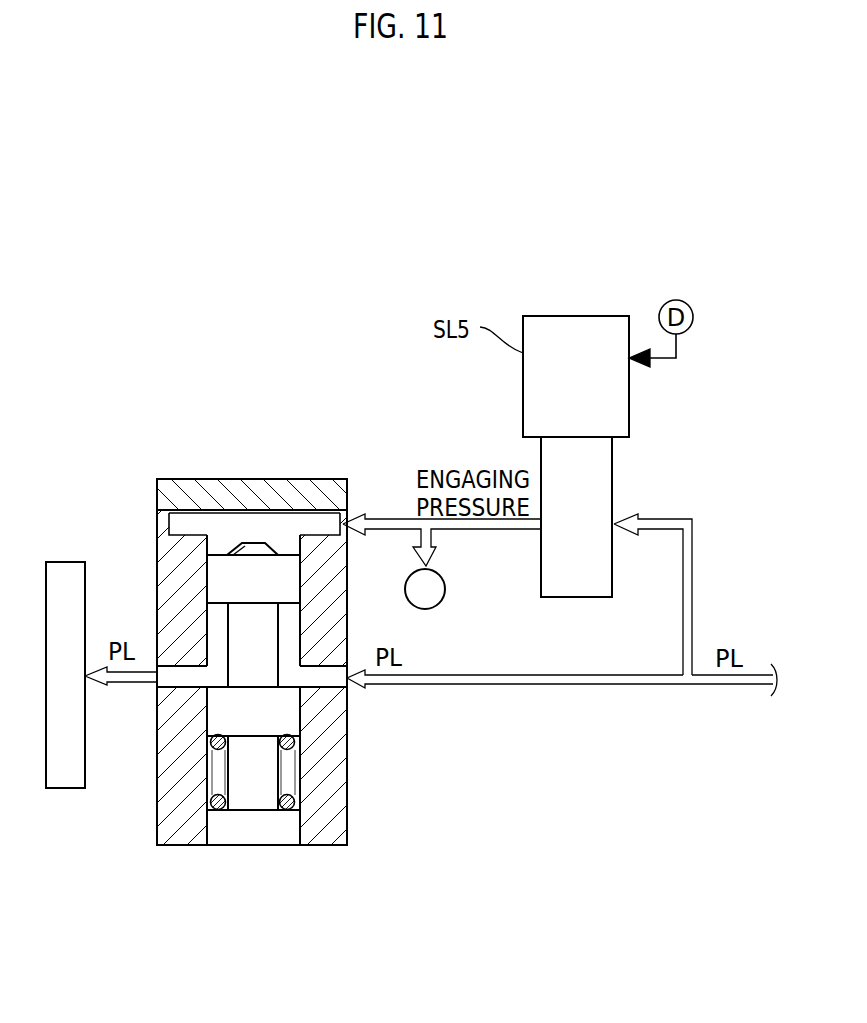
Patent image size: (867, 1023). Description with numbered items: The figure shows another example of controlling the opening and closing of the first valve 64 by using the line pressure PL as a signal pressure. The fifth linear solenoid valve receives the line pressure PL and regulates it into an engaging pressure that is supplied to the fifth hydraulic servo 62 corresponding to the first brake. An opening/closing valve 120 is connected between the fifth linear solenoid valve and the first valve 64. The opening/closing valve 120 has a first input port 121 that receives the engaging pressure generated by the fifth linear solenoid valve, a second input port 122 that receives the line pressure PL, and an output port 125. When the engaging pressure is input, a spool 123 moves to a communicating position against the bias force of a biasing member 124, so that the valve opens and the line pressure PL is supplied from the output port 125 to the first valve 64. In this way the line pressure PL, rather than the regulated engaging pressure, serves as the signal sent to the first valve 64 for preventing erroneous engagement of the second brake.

The opening/closing valve 120 is at (192, 456).
The first input port 121 is at (347, 508).
The second input port 122 is at (347, 690).
The spool 123 is at (190, 567).
The biasing member 124 is at (290, 802).
The output port 125 is at (160, 686).
The fifth hydraulic servo 62 is at (445, 598).
The first valve 64 is at (64, 562).